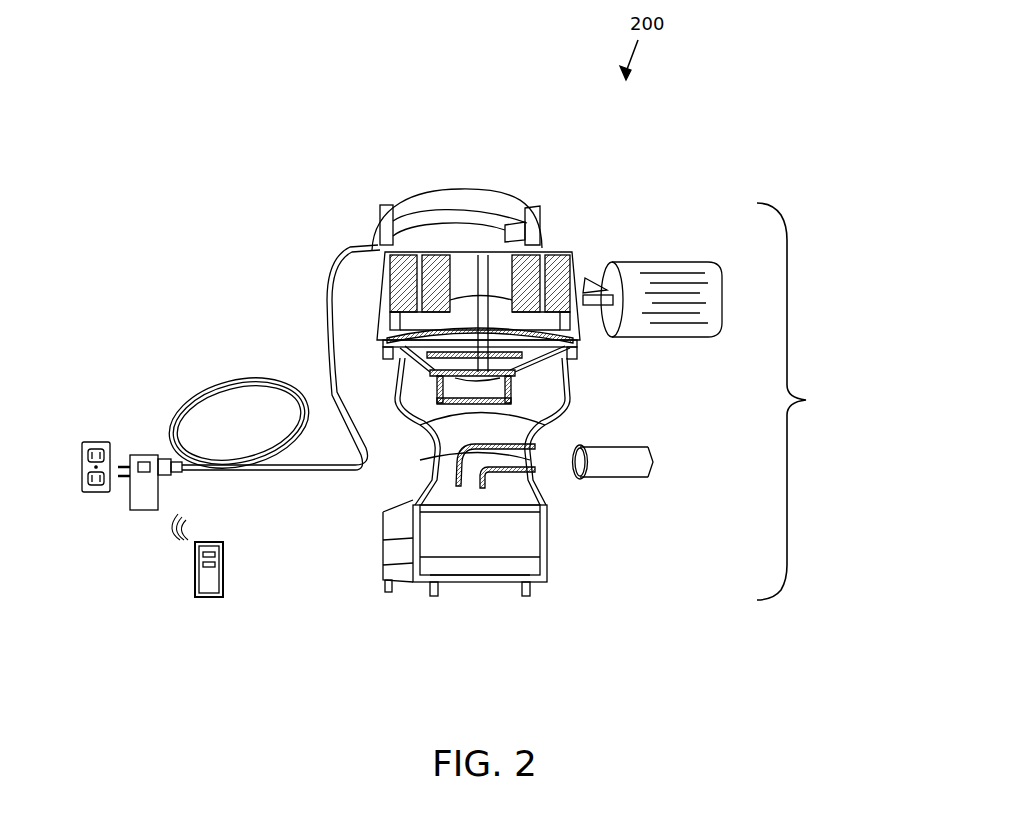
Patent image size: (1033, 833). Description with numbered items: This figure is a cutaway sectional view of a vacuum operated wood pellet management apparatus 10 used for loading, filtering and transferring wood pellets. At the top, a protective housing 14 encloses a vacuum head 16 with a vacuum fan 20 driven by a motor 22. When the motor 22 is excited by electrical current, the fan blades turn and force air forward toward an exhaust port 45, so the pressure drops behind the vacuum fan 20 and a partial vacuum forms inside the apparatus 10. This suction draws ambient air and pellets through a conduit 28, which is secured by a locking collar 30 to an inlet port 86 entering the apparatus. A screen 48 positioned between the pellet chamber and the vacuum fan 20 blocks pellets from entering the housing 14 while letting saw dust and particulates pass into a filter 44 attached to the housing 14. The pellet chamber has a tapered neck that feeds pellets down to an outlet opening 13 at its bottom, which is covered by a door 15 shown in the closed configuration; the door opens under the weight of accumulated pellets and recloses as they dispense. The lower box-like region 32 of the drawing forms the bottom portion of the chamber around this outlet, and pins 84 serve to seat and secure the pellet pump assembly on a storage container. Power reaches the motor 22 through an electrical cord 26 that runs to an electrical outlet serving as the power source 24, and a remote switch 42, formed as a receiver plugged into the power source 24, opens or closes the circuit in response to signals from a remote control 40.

The pellet management apparatus 10 is at (806, 400).
The outlet opening 13 is at (480, 586).
The protective housing 14 is at (392, 337).
The door 15 is at (448, 572).
The vacuum head 16 is at (406, 190).
The vacuum fan 20 is at (440, 352).
The motor 22 is at (489, 290).
The power source 24 is at (83, 441).
The electrical cord 26 is at (288, 471).
The conduit 28 is at (636, 480).
The locking collar 30 is at (586, 479).
The collection container 32 is at (530, 548).
The remote control 40 is at (224, 573).
The remote switch 42 is at (132, 501).
The filter 44 is at (690, 262).
The exhaust port 45 is at (603, 312).
The screen 48 is at (523, 395).
The pins 84 is at (540, 596).
The inlet port 86 is at (533, 476).